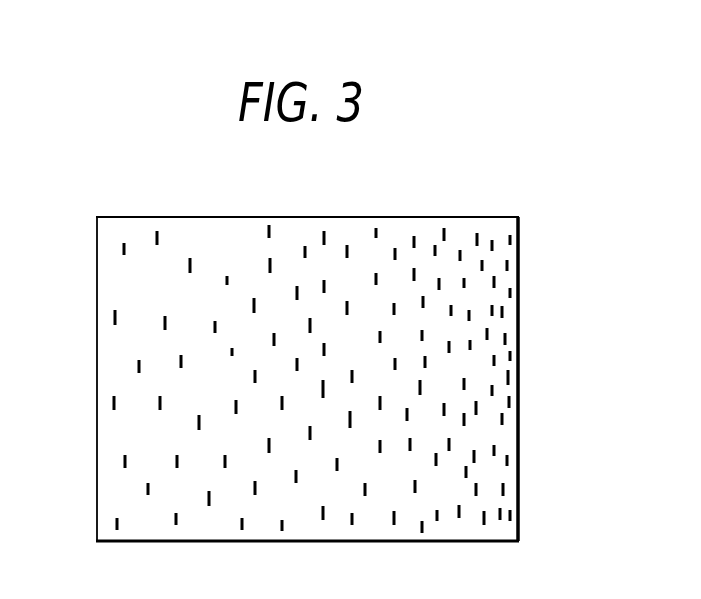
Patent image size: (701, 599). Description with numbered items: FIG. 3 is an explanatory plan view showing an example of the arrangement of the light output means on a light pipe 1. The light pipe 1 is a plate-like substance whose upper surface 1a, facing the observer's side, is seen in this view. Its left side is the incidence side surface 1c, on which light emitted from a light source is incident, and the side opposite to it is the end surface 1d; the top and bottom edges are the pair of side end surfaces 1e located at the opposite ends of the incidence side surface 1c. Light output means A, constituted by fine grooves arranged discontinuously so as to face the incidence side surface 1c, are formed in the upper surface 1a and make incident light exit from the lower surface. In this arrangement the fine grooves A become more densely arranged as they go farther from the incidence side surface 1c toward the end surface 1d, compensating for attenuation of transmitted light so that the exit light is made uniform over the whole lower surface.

The light pipe 1 is at (547, 340).
The upper surface 1a is at (412, 258).
The incidence side surface 1c is at (97, 352).
The end surface 1d is at (520, 250).
The side end surfaces 1e is at (340, 217).
The light output means A is at (229, 240).